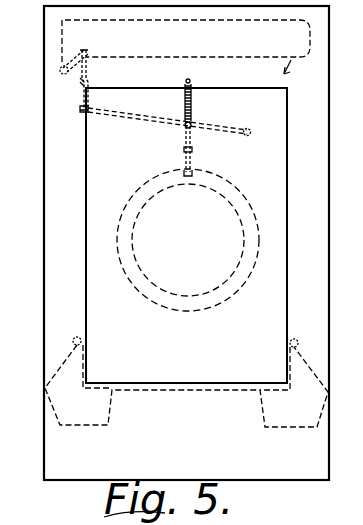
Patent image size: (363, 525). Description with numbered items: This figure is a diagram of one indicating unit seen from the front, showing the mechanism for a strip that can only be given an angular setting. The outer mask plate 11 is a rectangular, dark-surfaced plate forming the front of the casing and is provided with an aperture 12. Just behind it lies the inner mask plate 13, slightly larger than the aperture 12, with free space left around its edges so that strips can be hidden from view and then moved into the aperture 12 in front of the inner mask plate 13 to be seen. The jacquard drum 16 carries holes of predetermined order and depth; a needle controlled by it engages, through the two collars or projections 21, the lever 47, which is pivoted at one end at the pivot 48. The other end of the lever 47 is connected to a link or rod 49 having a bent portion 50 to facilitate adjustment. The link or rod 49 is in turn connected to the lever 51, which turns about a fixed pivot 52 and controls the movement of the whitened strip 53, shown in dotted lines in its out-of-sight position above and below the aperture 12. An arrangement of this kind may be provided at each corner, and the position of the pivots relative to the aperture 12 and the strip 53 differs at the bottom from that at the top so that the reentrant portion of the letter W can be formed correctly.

The outer mask plate 11 is at (334, 322).
The aperture 12 is at (292, 209).
The inner mask plate 13 is at (90, 220).
The jacquard drum 16 is at (190, 312).
The bosses or rollers 21 is at (194, 120).
The lever 47 is at (165, 123).
The pivot 48 is at (249, 137).
The link or rod 49 is at (80, 102).
The bent portion 50 is at (82, 80).
The lever 51 is at (90, 50).
The fixed pivot 52 is at (60, 68).
The strip 53 is at (285, 21).